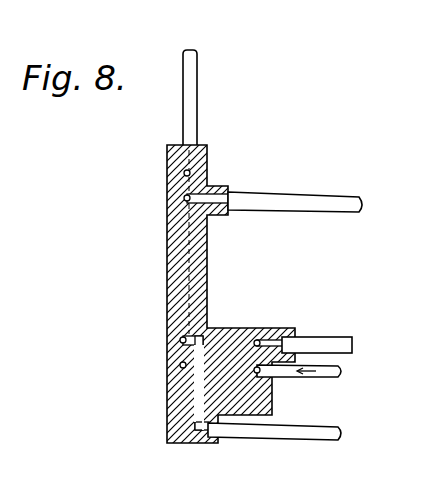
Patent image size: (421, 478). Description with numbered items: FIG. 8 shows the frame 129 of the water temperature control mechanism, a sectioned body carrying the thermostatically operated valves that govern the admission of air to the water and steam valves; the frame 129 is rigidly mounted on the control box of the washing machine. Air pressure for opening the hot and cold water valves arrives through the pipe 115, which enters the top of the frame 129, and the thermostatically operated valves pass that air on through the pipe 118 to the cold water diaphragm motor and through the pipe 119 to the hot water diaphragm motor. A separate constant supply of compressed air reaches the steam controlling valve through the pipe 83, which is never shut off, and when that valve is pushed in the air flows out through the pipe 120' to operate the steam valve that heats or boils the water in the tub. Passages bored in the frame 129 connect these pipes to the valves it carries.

The pipe 115 is at (197, 95).
The pipe 118 is at (348, 212).
The pipe 119 is at (325, 443).
The pipe 120' is at (315, 329).
The frame 129 is at (177, 259).
The pipe 83 is at (330, 373).